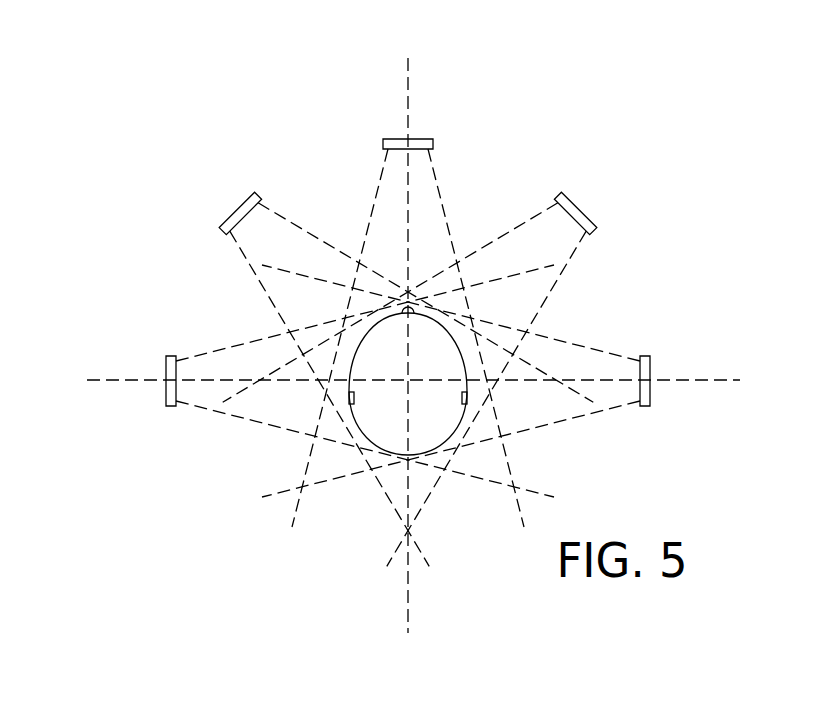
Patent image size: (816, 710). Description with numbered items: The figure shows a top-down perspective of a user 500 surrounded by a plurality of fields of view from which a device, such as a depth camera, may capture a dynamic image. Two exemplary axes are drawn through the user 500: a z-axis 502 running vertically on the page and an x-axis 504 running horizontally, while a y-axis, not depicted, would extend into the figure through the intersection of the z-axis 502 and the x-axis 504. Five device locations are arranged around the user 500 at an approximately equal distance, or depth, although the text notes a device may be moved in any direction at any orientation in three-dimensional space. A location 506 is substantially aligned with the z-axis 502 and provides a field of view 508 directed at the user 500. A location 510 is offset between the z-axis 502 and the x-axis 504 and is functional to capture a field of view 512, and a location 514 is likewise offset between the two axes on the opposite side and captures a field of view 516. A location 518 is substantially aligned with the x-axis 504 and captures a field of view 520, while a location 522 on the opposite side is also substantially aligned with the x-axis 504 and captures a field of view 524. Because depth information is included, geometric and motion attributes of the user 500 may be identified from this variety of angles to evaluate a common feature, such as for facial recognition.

The user 500 is at (428, 417).
The z-axis 502 is at (408, 335).
The x-axis 504 is at (393, 380).
The location 506 is at (387, 139).
The field of view 508 is at (369, 229).
The location 510 is at (251, 200).
The field of view 512 is at (248, 263).
The location 514 is at (566, 200).
The field of view 516 is at (567, 262).
The location 518 is at (170, 356).
The field of view 520 is at (247, 342).
The location 522 is at (647, 356).
The field of view 524 is at (573, 342).